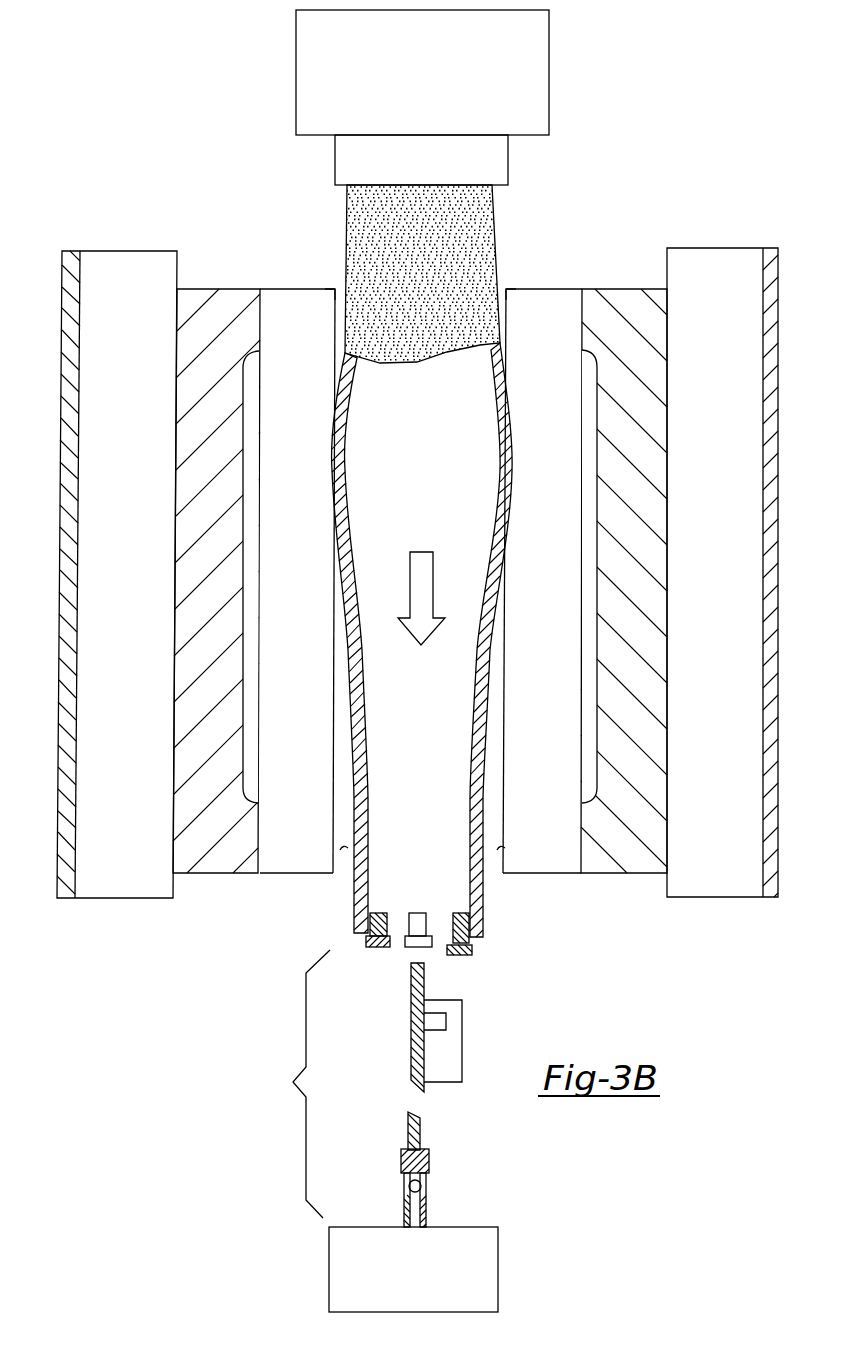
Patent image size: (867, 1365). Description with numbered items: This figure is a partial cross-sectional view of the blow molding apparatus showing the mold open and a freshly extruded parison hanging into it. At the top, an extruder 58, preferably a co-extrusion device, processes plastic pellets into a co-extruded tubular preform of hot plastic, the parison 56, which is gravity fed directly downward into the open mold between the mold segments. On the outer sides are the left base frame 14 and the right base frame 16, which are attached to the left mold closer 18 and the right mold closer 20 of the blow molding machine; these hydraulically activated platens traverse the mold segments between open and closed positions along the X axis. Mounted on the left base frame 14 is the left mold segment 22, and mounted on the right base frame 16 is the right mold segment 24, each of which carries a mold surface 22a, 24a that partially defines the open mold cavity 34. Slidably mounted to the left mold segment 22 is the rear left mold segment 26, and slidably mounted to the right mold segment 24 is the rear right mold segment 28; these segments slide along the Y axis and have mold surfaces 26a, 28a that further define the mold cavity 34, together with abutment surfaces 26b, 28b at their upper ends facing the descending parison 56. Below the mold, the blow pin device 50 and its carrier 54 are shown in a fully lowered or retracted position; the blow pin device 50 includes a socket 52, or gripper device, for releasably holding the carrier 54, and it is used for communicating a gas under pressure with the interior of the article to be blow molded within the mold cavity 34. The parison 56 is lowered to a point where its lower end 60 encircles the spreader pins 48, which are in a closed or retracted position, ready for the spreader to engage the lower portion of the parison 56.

The left base frame 14 is at (130, 309).
The right base frame 16 is at (722, 309).
The left mold closer 18 is at (68, 435).
The right mold closer 20 is at (778, 437).
The left mold segment 22 is at (206, 531).
The mold surface 22a is at (243, 648).
The right mold segment 24 is at (632, 538).
The mold surface 24a is at (590, 656).
The rear left mold segment 26 is at (282, 288).
The mold surface 26a is at (300, 481).
The abutment surface 26b is at (340, 300).
The rear right mold segment 28 is at (562, 288).
The mold surface 28a is at (547, 481).
The abutment surface 28b is at (484, 284).
The mold cavity 34 is at (343, 852).
The spreader pins 48 is at (413, 942).
The blow pin device 50 is at (384, 1197).
The socket 52 is at (430, 1157).
The carrier 54 is at (418, 1130).
The parison 56 is at (478, 212).
The extruder 58 is at (432, 49).
The lower end 60 is at (480, 933).